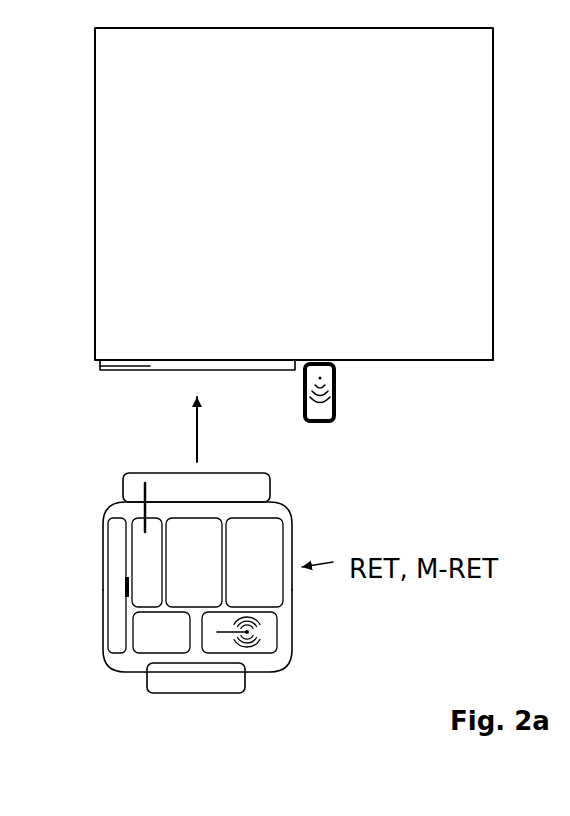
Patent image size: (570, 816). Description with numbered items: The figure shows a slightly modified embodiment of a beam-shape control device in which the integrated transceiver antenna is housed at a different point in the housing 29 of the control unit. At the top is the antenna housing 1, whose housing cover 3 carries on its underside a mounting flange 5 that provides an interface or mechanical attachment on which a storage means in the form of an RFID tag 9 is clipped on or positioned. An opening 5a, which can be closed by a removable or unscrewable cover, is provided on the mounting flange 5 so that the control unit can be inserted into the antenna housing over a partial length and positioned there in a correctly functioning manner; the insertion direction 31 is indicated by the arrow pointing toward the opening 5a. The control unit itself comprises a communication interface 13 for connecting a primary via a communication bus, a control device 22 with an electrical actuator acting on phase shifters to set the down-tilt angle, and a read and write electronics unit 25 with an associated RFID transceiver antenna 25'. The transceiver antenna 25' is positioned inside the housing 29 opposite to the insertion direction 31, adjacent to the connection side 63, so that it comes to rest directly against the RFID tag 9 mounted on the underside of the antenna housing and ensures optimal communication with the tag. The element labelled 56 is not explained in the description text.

The antenna housing 1 is at (301, 182).
The housing cover 3 is at (497, 208).
The mounting flange 5 is at (444, 363).
The opening 5a is at (206, 346).
The RFID tag 9 is at (336, 395).
The strip end 56 is at (145, 368).
The insertion direction 31 is at (203, 424).
The control device 22 is at (117, 497).
The RET housing 29 is at (292, 522).
The connection side 63 is at (265, 675).
The read and write electronics unit 25 is at (239, 690).
The RFID transceiver antenna 25' is at (298, 636).
The communication interface 13 is at (162, 682).